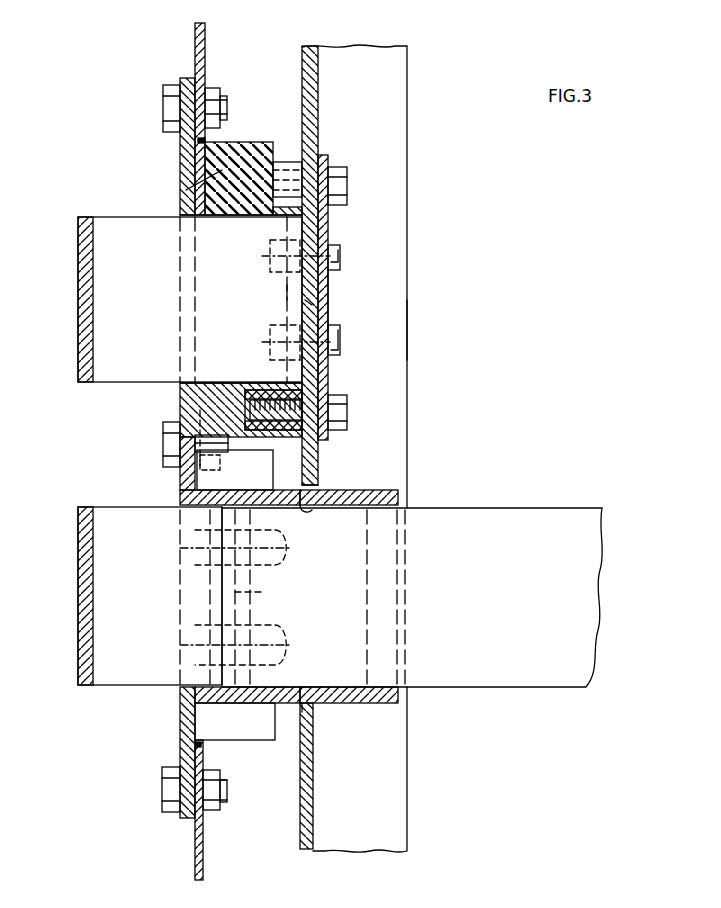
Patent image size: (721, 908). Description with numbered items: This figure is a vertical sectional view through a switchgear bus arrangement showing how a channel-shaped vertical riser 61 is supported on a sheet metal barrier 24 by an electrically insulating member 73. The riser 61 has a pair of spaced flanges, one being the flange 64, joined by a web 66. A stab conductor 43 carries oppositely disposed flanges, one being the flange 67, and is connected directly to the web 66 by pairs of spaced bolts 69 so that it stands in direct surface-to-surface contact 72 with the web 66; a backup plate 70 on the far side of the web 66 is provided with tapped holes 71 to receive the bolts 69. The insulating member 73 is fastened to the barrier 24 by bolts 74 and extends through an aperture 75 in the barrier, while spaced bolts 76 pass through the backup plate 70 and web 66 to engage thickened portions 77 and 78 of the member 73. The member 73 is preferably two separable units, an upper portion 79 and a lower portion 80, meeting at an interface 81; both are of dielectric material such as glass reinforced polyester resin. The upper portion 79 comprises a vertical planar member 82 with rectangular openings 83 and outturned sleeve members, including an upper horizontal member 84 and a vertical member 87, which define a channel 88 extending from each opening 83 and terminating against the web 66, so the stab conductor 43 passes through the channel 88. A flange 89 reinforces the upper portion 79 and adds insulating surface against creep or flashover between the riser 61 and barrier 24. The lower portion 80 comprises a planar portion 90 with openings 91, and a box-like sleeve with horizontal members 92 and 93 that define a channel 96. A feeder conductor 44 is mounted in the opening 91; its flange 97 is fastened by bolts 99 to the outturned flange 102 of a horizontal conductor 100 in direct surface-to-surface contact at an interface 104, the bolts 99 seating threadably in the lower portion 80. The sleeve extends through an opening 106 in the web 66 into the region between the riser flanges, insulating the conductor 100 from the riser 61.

The sheet metal barrier 24 is at (195, 45).
The first beam 43 is at (78, 278).
The feeder conductor 44 is at (78, 652).
The vertical riser 61 is at (407, 333).
The flange 64 is at (407, 210).
The web 66 is at (318, 126).
The flange 67 is at (287, 293).
The bolts 69 is at (270, 255).
The backup plate 70 is at (330, 240).
The tapped holes 71 is at (333, 318).
The surface-to-surface contact 72 is at (312, 305).
The electrically insulating member 73 is at (140, 442).
The bolts 74 is at (163, 115).
The aperture 75 is at (205, 140).
The bolts 76 is at (347, 174).
The thickened portion 77 is at (288, 162).
The thickened portion 78 is at (268, 465).
The upper portion 79 is at (180, 400).
The lower portion 80 is at (180, 496).
The interface 81 is at (210, 470).
The vertical planar member 82 is at (185, 150).
The rectangular openings 83 is at (185, 383).
The upper horizontal member 84 is at (328, 210).
The vertical member 87 is at (200, 285).
The channel 88 is at (250, 216).
The flange 89 is at (186, 190).
The planar portion 90 is at (180, 712).
The openings 91 is at (190, 688).
The horizontal member 92 is at (372, 490).
The horizontal member 93 is at (370, 703).
The channel 96 is at (330, 504).
The flange 97 is at (210, 585).
The bolts 99 is at (193, 548).
The horizontal conductor 100 is at (524, 528).
The outturned flange 102 is at (262, 592).
The interface 104 is at (213, 516).
The opening 106 is at (303, 506).